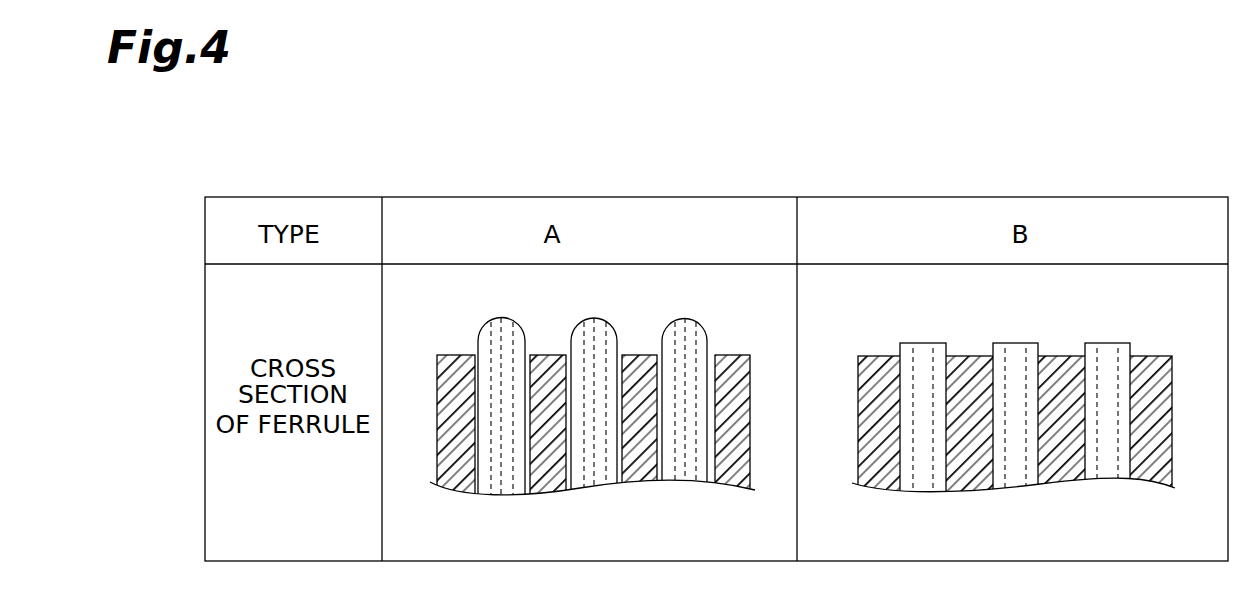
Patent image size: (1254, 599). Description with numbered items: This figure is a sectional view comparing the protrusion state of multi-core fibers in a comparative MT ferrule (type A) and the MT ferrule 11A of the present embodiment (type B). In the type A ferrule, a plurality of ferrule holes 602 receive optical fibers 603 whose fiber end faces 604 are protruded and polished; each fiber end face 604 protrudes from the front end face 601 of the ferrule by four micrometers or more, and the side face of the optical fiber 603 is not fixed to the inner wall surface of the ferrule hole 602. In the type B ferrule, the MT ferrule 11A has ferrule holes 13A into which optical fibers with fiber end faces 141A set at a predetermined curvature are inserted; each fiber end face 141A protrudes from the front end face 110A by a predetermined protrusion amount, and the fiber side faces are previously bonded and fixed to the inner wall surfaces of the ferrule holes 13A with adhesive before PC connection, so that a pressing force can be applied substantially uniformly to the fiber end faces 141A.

The front end face 601 is at (460, 352).
The ferrule hole 602 is at (533, 333).
The optical fiber 603 is at (500, 485).
The fiber end face 604 is at (496, 317).
The MT ferrule 11A is at (873, 355).
The ferrule hole 13A is at (907, 336).
The fiber end face 141A is at (1105, 342).
The front end face 110A is at (1147, 356).